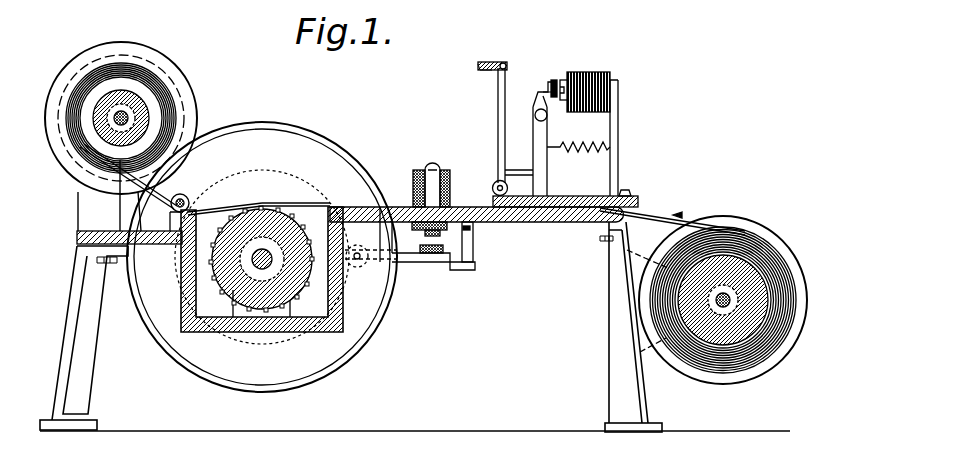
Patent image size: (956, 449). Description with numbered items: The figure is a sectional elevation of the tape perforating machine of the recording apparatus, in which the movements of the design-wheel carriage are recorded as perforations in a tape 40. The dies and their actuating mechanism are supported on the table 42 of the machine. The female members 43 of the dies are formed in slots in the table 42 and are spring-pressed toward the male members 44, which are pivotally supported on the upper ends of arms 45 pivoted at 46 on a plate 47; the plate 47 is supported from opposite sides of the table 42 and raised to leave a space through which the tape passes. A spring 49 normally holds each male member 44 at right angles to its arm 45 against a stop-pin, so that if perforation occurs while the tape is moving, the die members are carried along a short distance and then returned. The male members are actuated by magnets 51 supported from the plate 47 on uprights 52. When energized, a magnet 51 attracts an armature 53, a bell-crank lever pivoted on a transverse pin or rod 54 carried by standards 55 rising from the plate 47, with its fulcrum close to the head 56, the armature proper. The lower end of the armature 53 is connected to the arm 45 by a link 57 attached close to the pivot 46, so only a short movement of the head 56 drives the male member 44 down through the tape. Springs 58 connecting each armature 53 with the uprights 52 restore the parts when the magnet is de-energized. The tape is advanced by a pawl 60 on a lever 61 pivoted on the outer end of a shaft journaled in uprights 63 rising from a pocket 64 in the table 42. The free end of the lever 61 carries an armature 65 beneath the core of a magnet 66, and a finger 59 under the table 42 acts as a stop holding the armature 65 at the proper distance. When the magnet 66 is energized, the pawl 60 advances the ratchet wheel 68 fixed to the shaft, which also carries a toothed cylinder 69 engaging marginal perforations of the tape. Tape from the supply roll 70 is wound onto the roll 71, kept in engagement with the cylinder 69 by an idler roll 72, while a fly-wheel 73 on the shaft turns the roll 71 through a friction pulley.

The tape 40 is at (670, 214).
The table 42 is at (560, 224).
The female members of the dies 43 is at (382, 205).
The male members of the dies 44 is at (490, 60).
The arms 45 is at (498, 124).
The pivot 46 is at (494, 183).
The plate 47 is at (598, 196).
The spring 49 is at (487, 71).
The magnets 51 is at (607, 73).
The uprights 52 is at (619, 127).
The armatures 53 is at (548, 86).
The pin or rod 54 is at (539, 111).
The standards 55 is at (552, 197).
The head 56 is at (556, 82).
The links 57 is at (511, 170).
The springs 58 is at (578, 137).
The finger 59 is at (473, 250).
The pawl 60 is at (373, 266).
The lever 61 is at (410, 263).
The uprights 63 is at (288, 292).
The pocket 64 is at (188, 336).
The armature 65 is at (433, 262).
The magnet 66 is at (426, 165).
The ratchet wheel 68 is at (284, 168).
The cylinder 69 is at (302, 211).
The supply roll 70 is at (735, 255).
The roll 71 is at (152, 118).
The idler roll 72 is at (186, 196).
The fly-wheel 73 is at (352, 169).